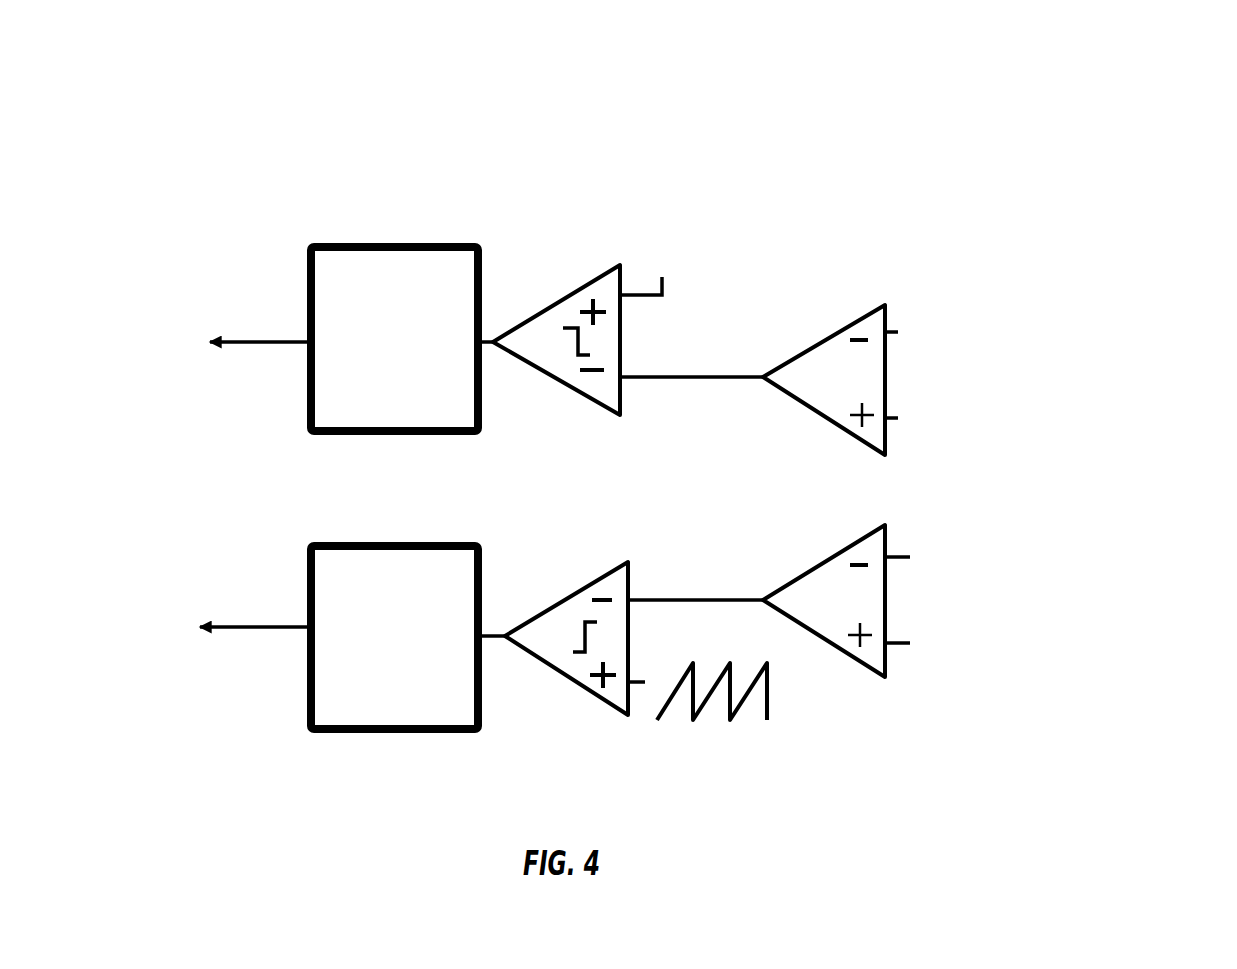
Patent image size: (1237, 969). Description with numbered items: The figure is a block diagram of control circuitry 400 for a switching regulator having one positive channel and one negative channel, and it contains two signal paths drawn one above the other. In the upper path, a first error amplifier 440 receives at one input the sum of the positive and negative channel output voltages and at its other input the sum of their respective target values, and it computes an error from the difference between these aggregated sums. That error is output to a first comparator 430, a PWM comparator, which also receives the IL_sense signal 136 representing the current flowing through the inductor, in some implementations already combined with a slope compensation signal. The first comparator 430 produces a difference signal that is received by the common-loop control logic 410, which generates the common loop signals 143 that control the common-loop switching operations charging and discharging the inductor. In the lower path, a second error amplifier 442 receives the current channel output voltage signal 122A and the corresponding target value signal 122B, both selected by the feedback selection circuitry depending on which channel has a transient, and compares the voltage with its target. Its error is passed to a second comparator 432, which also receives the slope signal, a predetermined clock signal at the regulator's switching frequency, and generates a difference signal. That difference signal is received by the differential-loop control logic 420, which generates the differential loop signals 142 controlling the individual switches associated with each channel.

The control circuitry 400 is at (949, 89).
The common-loop control logic 410 is at (395, 238).
The differential-loop control logic 420 is at (381, 538).
The first comparator 430 is at (628, 344).
The second comparator 432 is at (634, 557).
The first error amplifier 440 is at (892, 298).
The second error amplifier 442 is at (892, 518).
The IL_sense signal 136 is at (668, 280).
The common loop signals 143 is at (230, 333).
The differential loop signals 142 is at (231, 623).
The current channel output voltage signal 122A is at (906, 548).
The target value signal 122B is at (903, 636).